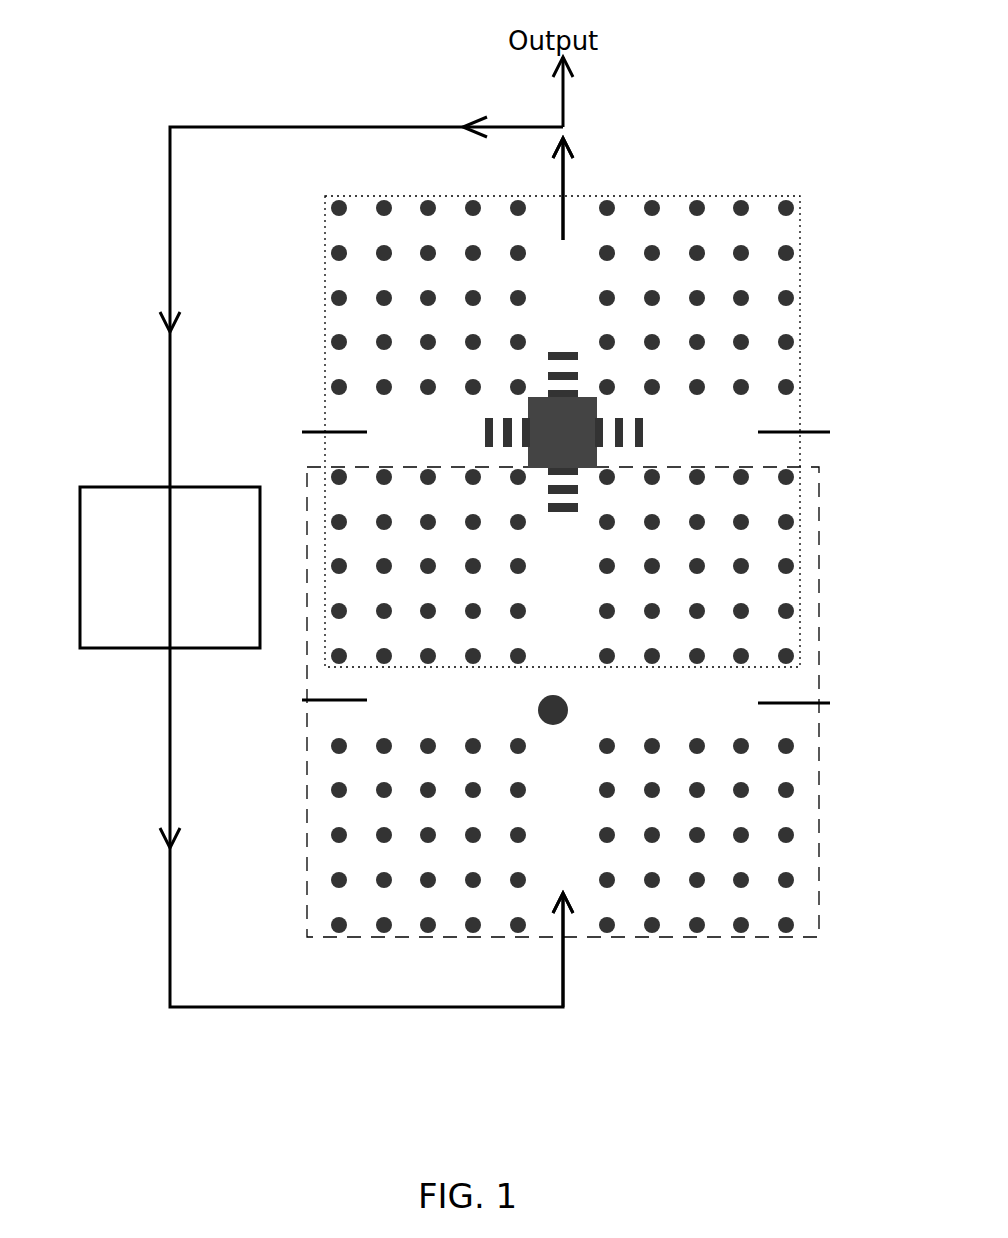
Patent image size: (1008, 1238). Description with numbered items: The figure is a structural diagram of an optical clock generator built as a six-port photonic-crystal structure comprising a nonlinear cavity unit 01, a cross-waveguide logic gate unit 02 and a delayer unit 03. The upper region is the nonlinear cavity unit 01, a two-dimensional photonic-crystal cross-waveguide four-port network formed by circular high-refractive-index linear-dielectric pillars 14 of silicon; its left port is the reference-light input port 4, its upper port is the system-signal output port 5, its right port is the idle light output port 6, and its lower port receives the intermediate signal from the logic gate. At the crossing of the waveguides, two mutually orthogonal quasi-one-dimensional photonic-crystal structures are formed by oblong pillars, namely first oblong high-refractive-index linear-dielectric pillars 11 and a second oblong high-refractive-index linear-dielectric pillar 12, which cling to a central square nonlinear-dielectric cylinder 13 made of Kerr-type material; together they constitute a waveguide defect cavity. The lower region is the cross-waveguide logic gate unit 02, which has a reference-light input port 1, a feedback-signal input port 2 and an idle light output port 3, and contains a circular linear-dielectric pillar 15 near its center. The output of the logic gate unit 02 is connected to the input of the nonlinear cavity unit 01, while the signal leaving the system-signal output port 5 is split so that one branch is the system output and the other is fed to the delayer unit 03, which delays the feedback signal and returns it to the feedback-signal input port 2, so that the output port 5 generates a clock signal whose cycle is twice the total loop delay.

The nonlinear cavity unit 01 is at (325, 196).
The cross-waveguide logic gate unit 02 is at (306, 938).
The delayer unit 03 is at (79, 487).
The reference-light input port 1 is at (806, 704).
The feedback-signal input port 2 is at (570, 950).
The idle light output port 3 is at (323, 701).
The reference-light input port 4 is at (323, 433).
The system-signal output port 5 is at (570, 189).
The idle light output port 6 is at (805, 433).
The first oblong high-refractive-index linear-dielectric pillar 11 is at (563, 350).
The second oblong high-refractive-index linear-dielectric pillar 12 is at (578, 395).
The square nonlinear-dielectric cylinder 13 is at (592, 397).
The circular high-refractive-index linear-dielectric pillar 14 is at (567, 548).
The circular linear-dielectric pillar 15 is at (538, 712).